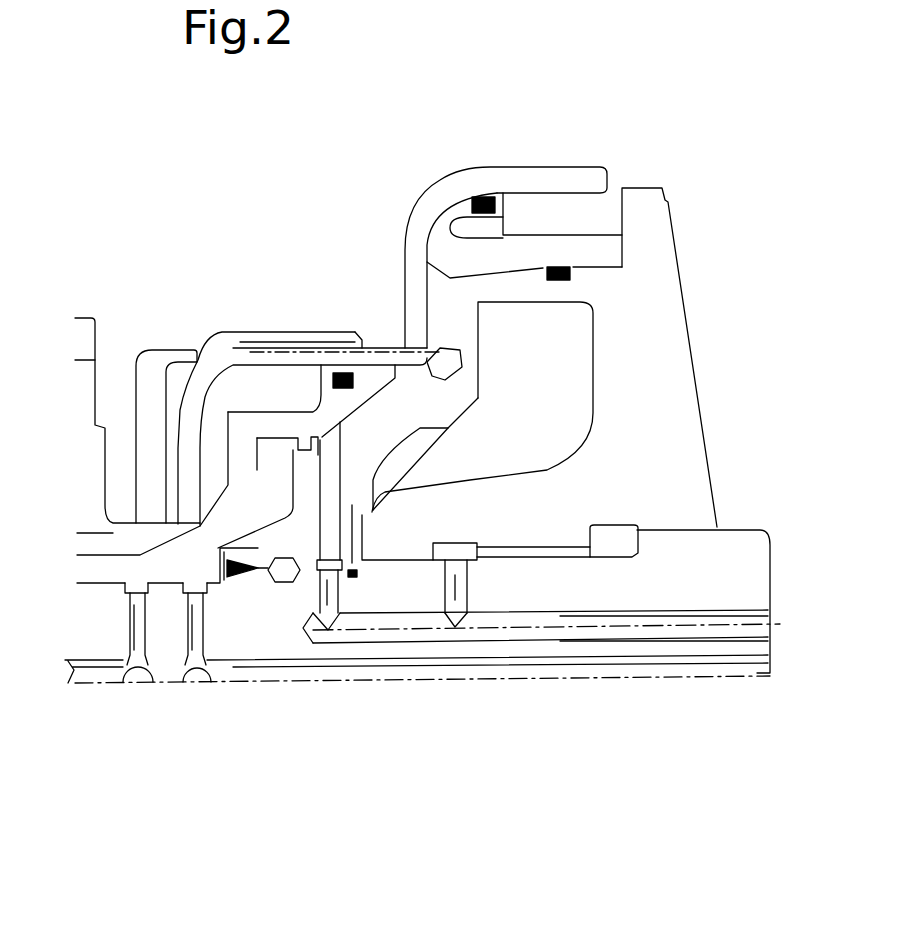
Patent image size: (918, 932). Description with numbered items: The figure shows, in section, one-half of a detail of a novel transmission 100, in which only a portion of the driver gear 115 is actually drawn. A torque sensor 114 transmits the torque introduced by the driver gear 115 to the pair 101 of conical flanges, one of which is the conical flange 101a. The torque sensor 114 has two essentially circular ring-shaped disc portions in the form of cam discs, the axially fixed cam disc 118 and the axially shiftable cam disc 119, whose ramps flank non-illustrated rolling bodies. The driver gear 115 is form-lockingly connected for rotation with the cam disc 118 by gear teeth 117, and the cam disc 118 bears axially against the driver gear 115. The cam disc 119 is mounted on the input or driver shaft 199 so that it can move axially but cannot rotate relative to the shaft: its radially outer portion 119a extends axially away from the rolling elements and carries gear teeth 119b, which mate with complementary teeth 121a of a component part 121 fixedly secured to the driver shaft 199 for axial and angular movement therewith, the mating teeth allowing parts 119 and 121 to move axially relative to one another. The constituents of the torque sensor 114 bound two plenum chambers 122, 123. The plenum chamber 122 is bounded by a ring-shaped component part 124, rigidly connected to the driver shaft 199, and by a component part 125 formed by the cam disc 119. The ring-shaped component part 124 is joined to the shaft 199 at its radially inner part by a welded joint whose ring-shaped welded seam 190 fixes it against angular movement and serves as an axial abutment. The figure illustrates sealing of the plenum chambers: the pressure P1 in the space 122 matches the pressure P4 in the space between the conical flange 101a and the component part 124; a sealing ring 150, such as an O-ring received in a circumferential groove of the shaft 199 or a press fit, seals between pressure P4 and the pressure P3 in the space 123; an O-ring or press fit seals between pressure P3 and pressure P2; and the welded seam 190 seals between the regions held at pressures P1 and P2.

The transmission 100 is at (432, 97).
The pair of conical flanges 101 is at (748, 157).
The conical flange 101a is at (665, 285).
The torque sensor 114 is at (182, 220).
The driver gear 115 is at (86, 377).
The gear teeth 117 is at (87, 534).
The cam disc 118 is at (156, 363).
The cam disc 119 is at (225, 348).
The radially outer portion 119a is at (282, 335).
The gear teeth 119b is at (300, 353).
The component part 121 is at (405, 352).
The complementary teeth 121a is at (378, 343).
The plenum chamber 122 is at (260, 525).
The plenum chamber 123 is at (342, 563).
The ring-shaped component part 124 is at (437, 398).
The component part 125 is at (170, 543).
The sealing ring 150 is at (352, 578).
The welded seam 190 is at (203, 575).
The driver shaft 199 is at (252, 628).
The pressure p1 P1 is at (272, 488).
The pressure p2 P2 is at (280, 582).
The pressure p3 P3 is at (363, 632).
The pressure p4 P4 is at (580, 367).